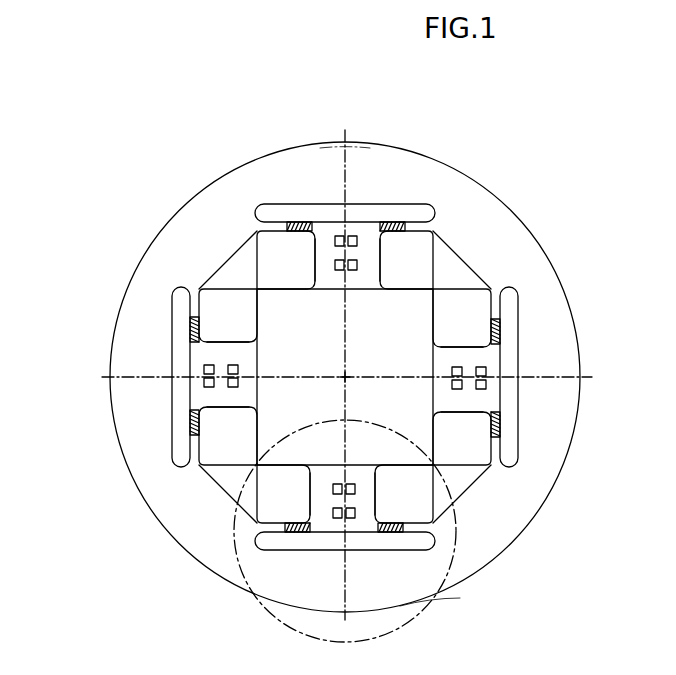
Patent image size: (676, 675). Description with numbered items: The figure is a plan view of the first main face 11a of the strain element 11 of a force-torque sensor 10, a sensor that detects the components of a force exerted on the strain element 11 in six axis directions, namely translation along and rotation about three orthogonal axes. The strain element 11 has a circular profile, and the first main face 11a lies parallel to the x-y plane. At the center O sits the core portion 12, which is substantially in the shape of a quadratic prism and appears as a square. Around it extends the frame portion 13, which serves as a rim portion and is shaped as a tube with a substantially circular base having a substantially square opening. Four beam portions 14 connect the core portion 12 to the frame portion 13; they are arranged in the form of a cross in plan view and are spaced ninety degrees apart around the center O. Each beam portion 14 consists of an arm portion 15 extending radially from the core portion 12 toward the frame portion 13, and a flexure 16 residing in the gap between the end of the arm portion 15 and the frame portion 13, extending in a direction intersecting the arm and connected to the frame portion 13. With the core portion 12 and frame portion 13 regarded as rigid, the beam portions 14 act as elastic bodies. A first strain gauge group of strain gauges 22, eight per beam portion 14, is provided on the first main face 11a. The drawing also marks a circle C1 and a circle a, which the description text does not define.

The force-torque sensor 10 is at (62, 140).
The strain element 11 is at (203, 181).
The first main face 11a is at (332, 183).
The core portion 12 is at (417, 305).
The frame portion 13 is at (494, 218).
The beam portion 14 is at (385, 196).
The arm portion 15 is at (370, 257).
The flexure 16 is at (275, 229).
The strain gauge 22 is at (353, 248).
The center O is at (345, 377).
The outer circle C1 is at (430, 602).
The circle a is at (348, 617).